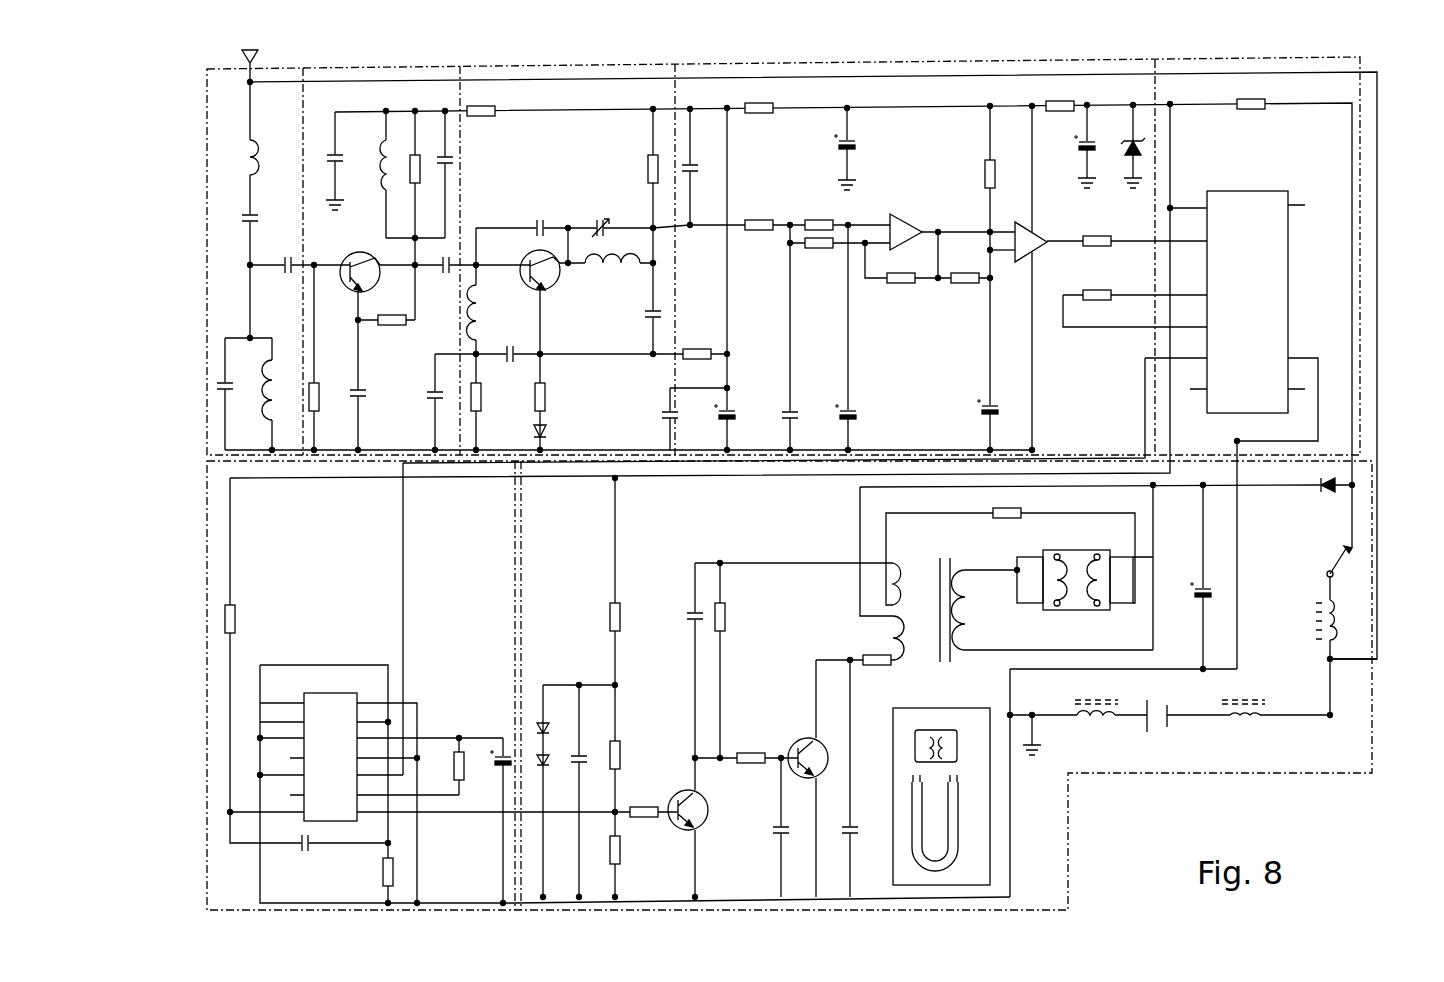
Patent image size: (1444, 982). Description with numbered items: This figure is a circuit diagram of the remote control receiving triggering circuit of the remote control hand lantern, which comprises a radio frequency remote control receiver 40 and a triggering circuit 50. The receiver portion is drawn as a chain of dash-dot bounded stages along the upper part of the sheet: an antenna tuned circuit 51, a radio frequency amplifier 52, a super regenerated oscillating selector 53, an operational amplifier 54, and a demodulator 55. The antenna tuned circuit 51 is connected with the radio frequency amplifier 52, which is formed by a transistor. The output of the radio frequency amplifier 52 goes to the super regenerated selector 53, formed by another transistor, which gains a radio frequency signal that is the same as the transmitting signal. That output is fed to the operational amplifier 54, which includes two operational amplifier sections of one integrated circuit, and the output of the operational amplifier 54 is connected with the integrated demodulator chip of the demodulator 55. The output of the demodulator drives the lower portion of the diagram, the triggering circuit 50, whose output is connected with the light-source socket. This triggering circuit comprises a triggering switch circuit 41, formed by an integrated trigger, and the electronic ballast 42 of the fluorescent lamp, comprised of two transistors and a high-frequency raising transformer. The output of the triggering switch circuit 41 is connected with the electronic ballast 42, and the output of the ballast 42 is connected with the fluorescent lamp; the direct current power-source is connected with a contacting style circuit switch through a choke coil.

The remote control receiver 40 is at (1290, 755).
The triggering switch circuit 41 is at (283, 828).
The ballast 42 is at (1060, 757).
The triggering circuit 50 is at (1335, 85).
The antenna tuned circuit 51 is at (273, 100).
The radio frequency amplifier 52 is at (372, 100).
The super regenerated oscillating selector 53 is at (557, 190).
The operational amplifier 54 is at (883, 162).
The demodulator 55 is at (1190, 158).